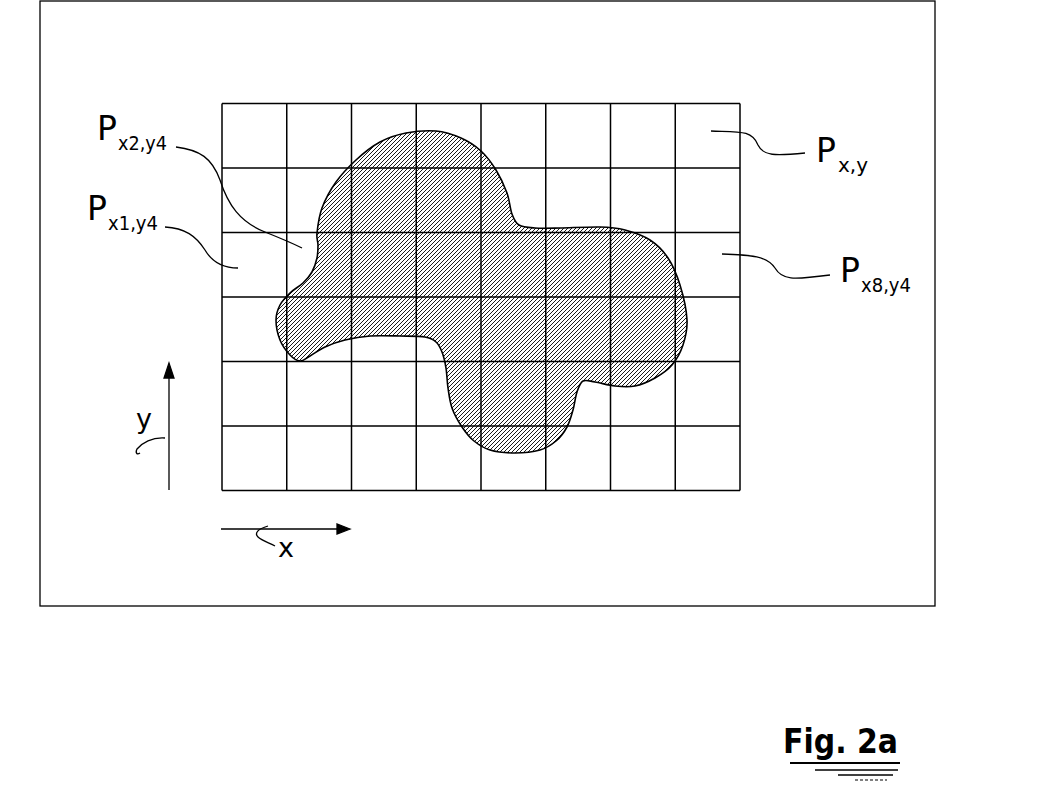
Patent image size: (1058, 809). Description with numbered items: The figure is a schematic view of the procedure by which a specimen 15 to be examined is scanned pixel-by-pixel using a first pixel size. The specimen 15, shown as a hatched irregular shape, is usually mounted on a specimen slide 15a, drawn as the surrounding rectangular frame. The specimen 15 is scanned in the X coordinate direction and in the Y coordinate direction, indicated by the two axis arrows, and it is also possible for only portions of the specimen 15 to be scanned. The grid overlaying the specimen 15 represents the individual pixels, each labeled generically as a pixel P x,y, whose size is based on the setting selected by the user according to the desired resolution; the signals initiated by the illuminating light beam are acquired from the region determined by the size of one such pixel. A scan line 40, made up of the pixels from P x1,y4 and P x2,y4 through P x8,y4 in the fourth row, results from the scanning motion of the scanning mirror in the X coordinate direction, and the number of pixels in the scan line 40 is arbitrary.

The specimen 15 is at (430, 148).
The specimen slide 15a is at (624, 594).
The scan line 40 is at (723, 281).